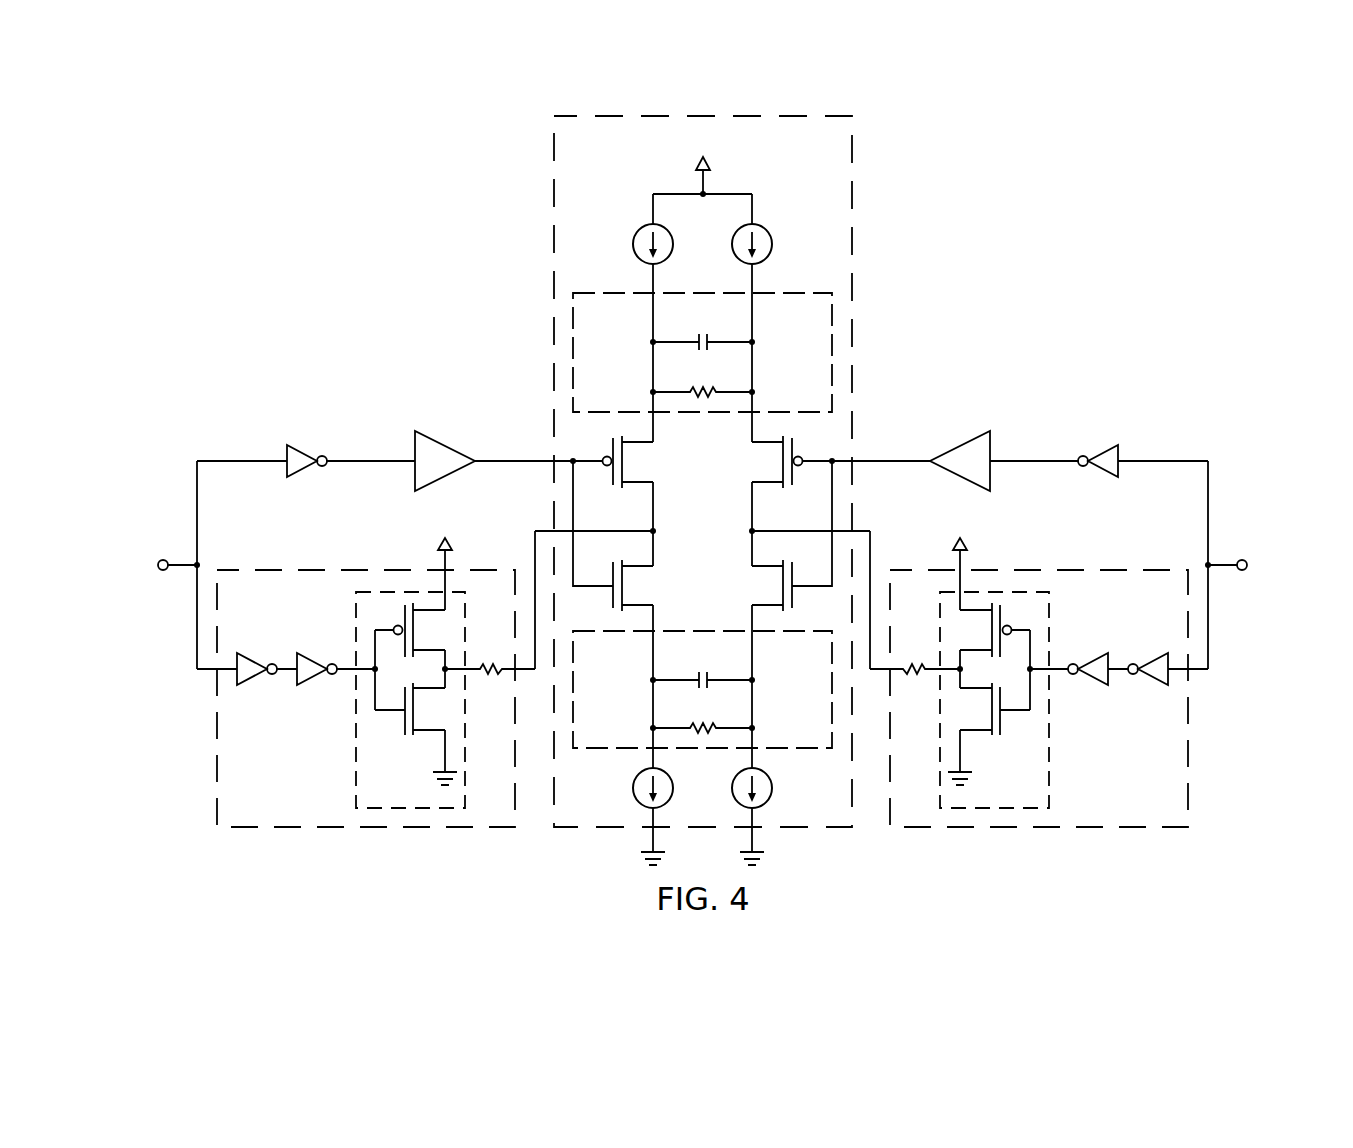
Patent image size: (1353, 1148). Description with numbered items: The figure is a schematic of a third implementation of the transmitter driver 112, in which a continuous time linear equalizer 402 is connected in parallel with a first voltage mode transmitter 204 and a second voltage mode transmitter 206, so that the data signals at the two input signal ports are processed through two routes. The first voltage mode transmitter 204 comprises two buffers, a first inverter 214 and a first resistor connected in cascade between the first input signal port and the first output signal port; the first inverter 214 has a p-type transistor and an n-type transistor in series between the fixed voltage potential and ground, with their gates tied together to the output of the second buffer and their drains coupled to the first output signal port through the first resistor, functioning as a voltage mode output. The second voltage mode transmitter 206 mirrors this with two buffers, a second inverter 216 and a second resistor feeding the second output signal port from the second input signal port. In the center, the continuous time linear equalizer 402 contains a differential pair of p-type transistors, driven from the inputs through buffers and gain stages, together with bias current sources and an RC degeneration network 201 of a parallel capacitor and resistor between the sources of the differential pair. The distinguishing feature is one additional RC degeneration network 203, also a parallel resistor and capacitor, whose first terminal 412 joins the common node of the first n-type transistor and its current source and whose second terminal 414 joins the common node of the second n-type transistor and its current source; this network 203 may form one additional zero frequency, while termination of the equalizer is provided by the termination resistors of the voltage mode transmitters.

The transmitter driver 112 is at (468, 202).
The continuous time linear equalizer 402 is at (862, 345).
The RC degeneration network 201 is at (704, 284).
The RC degeneration network 203 is at (704, 758).
The first terminal 412 is at (653, 700).
The second terminal 414 is at (752, 700).
The first voltage mode transmitter 204 is at (312, 835).
The second voltage mode transmitter 206 is at (1093, 835).
The first inverter 214 is at (348, 714).
The second inverter 216 is at (1057, 714).